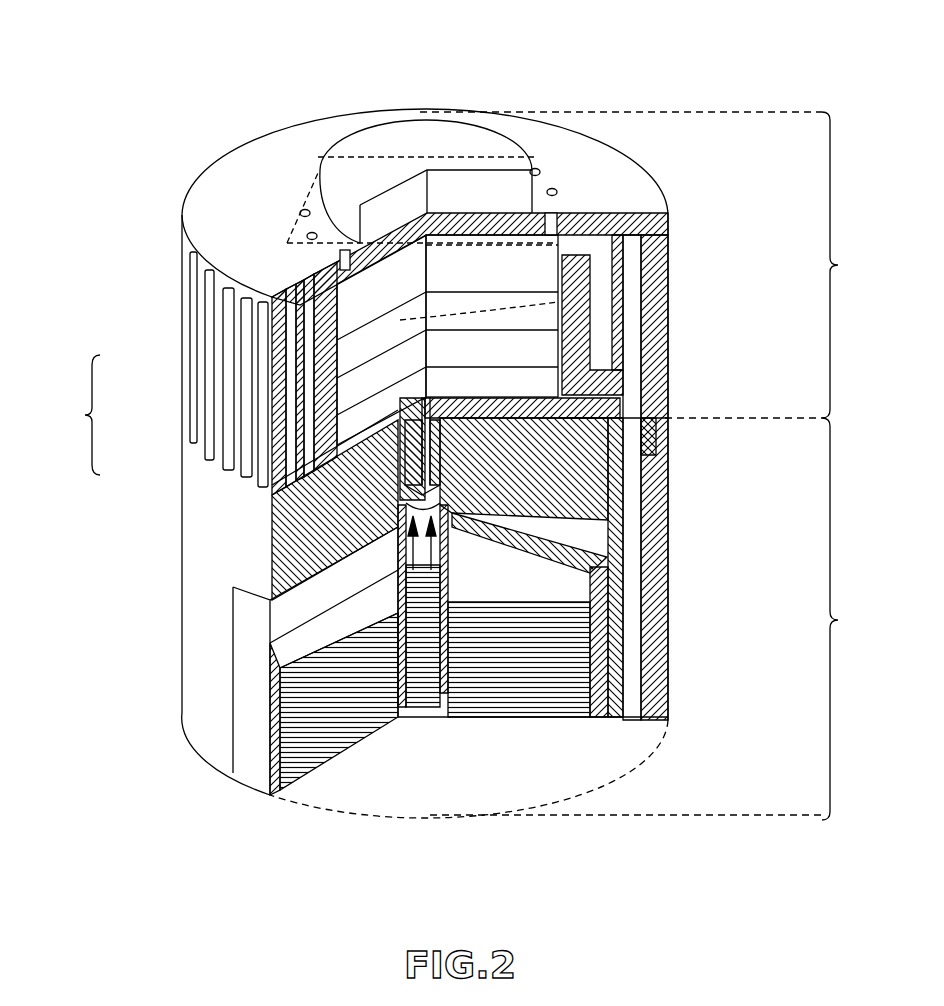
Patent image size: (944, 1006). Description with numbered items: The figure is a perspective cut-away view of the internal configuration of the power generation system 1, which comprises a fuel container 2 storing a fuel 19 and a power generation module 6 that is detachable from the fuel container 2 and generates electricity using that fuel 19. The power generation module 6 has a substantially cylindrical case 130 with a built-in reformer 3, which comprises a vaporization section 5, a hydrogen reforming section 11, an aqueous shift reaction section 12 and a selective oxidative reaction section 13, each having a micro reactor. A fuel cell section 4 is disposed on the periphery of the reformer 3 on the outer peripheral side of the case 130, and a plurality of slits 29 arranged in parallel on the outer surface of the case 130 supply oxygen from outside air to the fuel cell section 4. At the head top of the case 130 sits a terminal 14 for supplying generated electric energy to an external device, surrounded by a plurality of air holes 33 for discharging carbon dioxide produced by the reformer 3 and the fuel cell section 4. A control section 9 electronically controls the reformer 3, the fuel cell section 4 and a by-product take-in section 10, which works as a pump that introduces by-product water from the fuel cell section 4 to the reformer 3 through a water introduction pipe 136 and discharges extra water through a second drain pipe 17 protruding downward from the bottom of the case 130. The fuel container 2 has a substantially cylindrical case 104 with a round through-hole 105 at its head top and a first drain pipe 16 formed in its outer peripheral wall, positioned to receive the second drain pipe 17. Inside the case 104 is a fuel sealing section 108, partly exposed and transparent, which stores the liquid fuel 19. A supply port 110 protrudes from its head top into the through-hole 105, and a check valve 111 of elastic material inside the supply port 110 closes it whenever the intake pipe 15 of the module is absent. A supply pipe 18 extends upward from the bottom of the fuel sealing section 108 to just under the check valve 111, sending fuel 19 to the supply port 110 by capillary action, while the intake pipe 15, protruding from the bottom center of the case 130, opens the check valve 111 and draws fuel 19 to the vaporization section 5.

The power generation system 1 is at (226, 140).
The fuel container 2 is at (644, 619).
The reformer 3 is at (80, 415).
The fuel cell section 4 is at (622, 296).
The vaporization section 5 is at (280, 468).
The power generation module 6 is at (639, 265).
The control section 9 is at (372, 157).
The by-product take-in section 10 is at (620, 388).
The hydrogen reforming section 11 is at (320, 400).
The aqueous shift reaction section 12 is at (300, 375).
The selective oxidative reaction section 13 is at (295, 345).
The terminal 14 is at (462, 140).
The intake pipe 15 is at (385, 492).
The first drain pipe 16 is at (585, 545).
The second drain pipe 17 is at (650, 436).
The supply pipe 18 is at (452, 582).
The fuel 19 is at (313, 748).
The slits 29 is at (263, 345).
The air holes 33 is at (335, 252).
The case 104 is at (215, 580).
The through-hole 105 is at (648, 488).
The fuel sealing section 108 is at (600, 582).
The supply port 110 is at (420, 498).
The check valve 111 is at (618, 548).
The case 130 is at (662, 232).
The water introduction pipe 136 is at (645, 406).